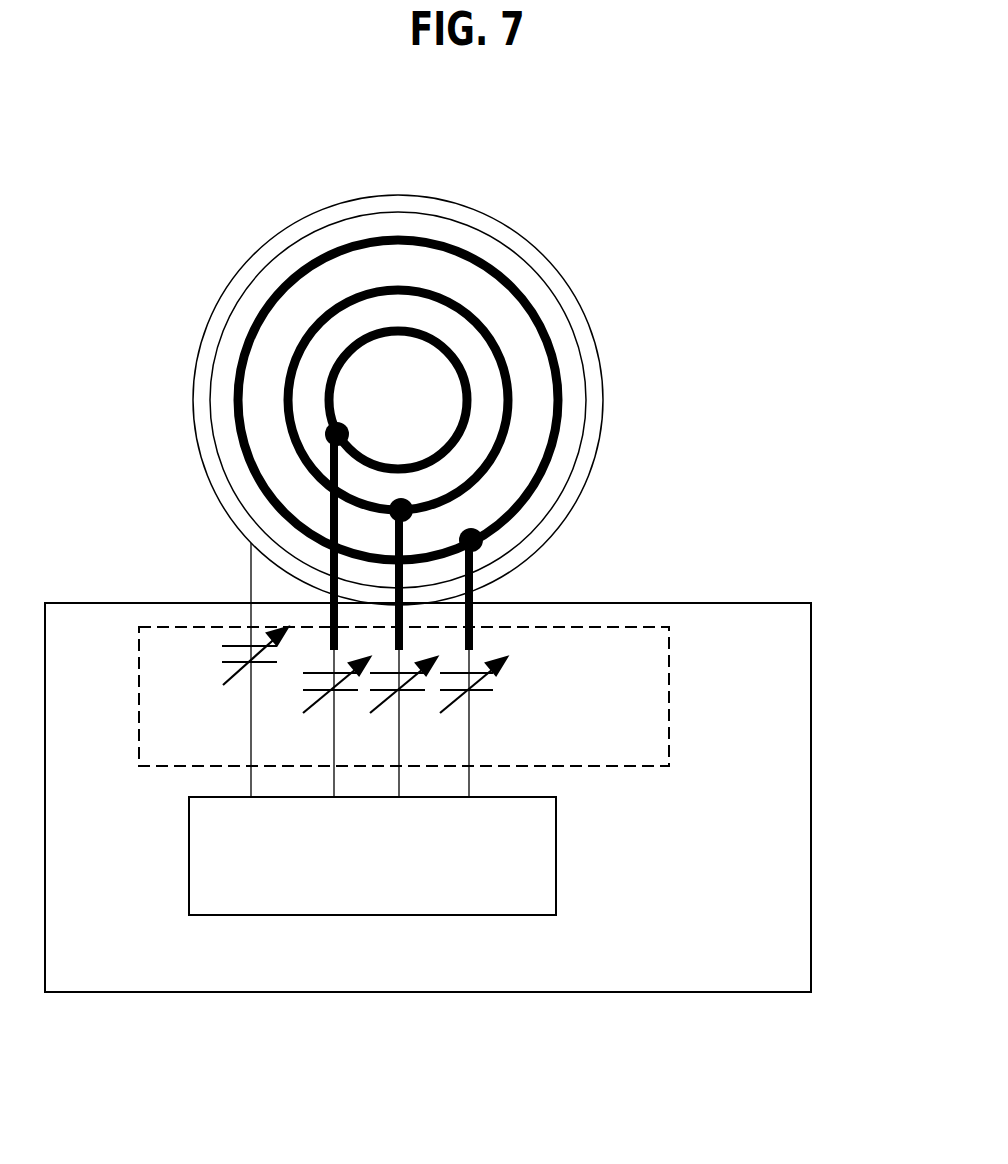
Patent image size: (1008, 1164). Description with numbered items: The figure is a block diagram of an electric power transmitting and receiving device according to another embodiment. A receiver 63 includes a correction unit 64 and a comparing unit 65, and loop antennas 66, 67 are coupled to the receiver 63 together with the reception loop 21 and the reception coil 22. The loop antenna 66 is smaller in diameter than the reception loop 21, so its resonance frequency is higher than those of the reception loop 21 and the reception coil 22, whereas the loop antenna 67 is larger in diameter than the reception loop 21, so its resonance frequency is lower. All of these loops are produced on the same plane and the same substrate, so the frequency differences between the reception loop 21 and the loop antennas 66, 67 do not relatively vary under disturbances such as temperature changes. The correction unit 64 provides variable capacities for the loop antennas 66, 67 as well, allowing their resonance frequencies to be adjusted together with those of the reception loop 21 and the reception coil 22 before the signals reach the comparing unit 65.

The reception loop 21 is at (402, 507).
The reception coil 22 is at (302, 223).
The receiver 63 is at (812, 920).
The correction unit 64 is at (670, 715).
The comparing unit 65 is at (192, 840).
The loop antenna 66 is at (462, 397).
The loop antenna 67 is at (543, 325).